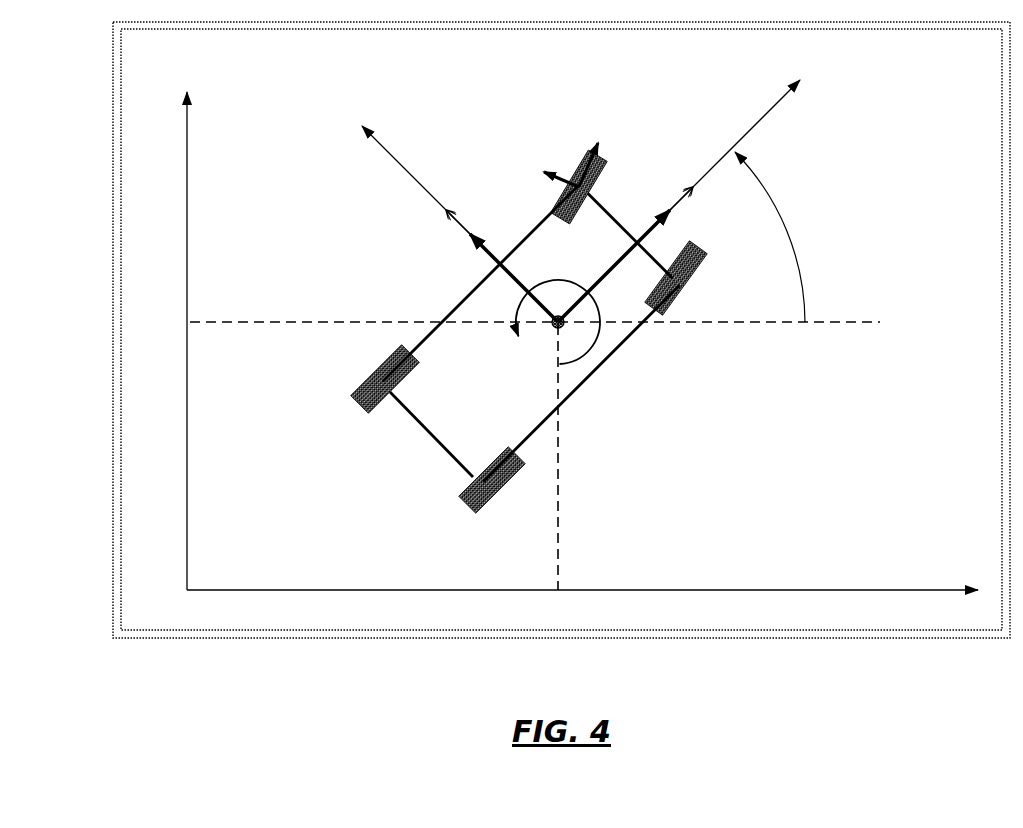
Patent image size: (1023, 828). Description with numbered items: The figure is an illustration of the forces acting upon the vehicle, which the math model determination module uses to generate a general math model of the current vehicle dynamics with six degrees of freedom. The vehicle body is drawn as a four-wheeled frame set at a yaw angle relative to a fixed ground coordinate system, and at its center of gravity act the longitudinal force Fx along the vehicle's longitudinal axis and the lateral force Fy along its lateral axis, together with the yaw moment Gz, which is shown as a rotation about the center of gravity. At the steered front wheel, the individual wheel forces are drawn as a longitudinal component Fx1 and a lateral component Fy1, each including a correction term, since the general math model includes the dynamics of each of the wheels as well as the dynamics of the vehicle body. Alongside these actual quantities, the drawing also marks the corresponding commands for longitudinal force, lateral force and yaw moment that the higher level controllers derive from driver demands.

The longitudinal force Fx is at (633, 266).
The lateral force Fy is at (499, 278).
The front-left wheel longitudinal force with correction Fx1 is at (620, 145).
The front-left wheel lateral force with correction Fy1 is at (529, 163).
The yaw moment Gz is at (541, 322).